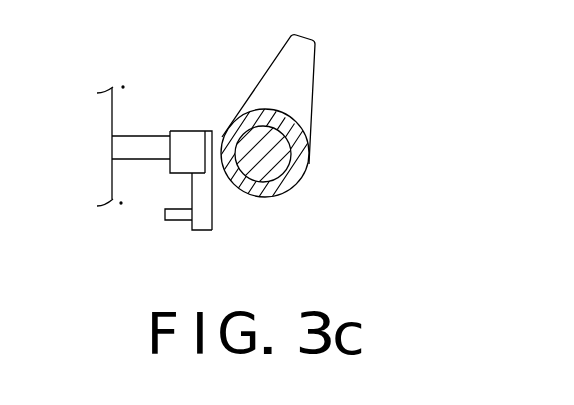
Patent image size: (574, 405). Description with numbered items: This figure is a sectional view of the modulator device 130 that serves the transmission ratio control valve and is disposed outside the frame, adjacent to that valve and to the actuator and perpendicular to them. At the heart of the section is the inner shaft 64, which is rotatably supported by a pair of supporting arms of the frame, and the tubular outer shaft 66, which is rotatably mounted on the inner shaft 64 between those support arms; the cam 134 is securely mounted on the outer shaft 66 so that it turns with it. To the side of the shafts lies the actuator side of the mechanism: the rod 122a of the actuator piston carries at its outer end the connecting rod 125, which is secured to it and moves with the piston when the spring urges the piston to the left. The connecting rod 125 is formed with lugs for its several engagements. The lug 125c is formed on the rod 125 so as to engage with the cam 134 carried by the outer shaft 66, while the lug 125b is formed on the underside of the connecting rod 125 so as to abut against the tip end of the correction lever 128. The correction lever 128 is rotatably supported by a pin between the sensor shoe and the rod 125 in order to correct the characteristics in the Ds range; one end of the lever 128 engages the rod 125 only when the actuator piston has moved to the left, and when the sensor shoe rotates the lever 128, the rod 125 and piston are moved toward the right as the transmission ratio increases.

The modulator device 130 is at (358, 51).
The cam 134 is at (312, 117).
The tubular outer shaft 66 is at (298, 163).
The inner shaft 64 is at (274, 168).
The rod of the piston 122a is at (130, 143).
The connecting rod 125 is at (178, 163).
The lug 125b is at (208, 221).
The lug 125c is at (204, 146).
The correction lever 128 is at (181, 217).